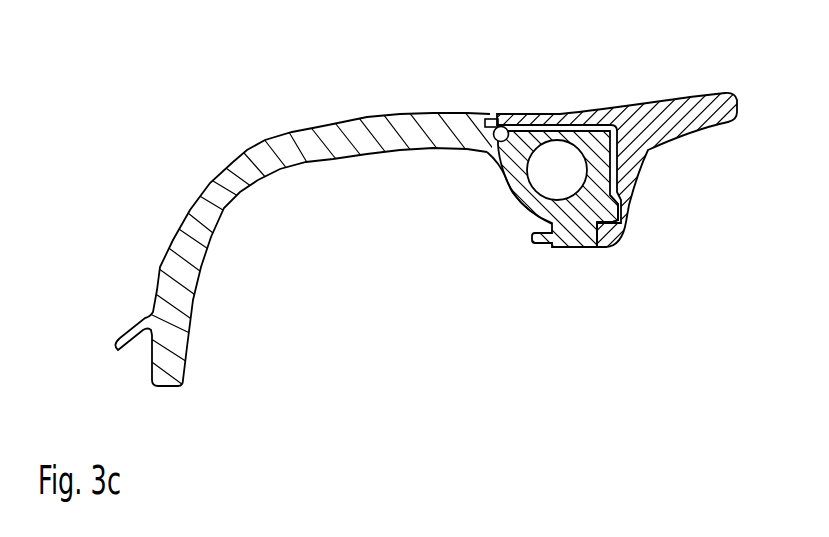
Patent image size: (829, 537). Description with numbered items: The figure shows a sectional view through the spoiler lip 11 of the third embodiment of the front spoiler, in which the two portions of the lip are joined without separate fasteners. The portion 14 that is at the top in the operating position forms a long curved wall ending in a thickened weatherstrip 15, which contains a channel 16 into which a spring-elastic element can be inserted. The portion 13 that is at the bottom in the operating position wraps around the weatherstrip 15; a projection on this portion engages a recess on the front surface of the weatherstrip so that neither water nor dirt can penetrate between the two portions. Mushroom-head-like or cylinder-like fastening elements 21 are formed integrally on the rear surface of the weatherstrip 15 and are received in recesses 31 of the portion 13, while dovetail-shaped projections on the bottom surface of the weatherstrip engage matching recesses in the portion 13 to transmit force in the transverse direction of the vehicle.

The spoiler lip 11 is at (194, 128).
The portion of the spoiler lip at the bottom in the operating position 13 is at (648, 85).
The portion of the spoiler lip at the top in the operating position 14 is at (310, 108).
The weatherstrip 15 is at (520, 199).
The channel 16 is at (560, 149).
The fastening elements 21 is at (571, 240).
The recesses 31 is at (594, 269).